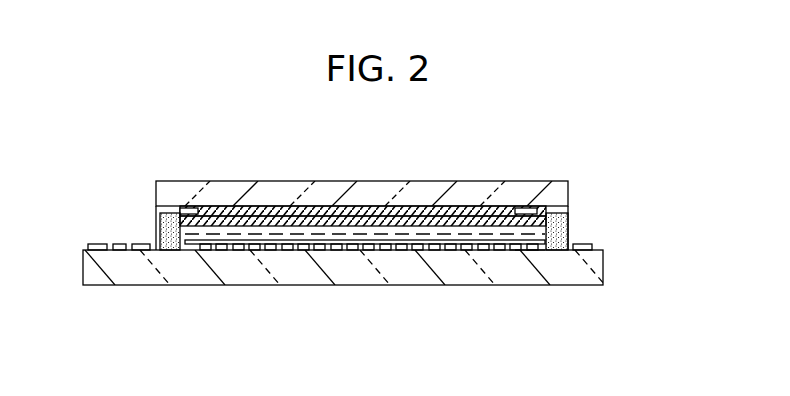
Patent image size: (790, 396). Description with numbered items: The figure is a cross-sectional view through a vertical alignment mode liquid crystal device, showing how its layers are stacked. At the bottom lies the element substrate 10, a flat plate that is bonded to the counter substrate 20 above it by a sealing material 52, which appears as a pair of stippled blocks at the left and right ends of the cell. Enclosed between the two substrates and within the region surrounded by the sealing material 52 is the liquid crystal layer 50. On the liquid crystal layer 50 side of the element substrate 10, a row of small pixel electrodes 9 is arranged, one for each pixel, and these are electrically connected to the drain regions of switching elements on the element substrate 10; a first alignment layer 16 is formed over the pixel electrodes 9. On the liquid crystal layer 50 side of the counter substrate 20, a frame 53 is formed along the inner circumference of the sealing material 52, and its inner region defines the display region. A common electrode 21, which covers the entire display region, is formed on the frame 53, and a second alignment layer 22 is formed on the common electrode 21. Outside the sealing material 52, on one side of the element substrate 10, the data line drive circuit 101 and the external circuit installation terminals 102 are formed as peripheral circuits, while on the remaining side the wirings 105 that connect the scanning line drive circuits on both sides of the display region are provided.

The pixel electrodes 9 is at (250, 251).
The element substrate 10 is at (457, 267).
The first alignment layer 16 is at (530, 251).
The counter substrate 20 is at (358, 200).
The common electrode 21 is at (470, 218).
The second alignment layer 22 is at (250, 208).
The liquid crystal layer 50 is at (360, 250).
The sealing material 52 is at (555, 237).
The frame 53 is at (200, 208).
The data line drive circuit 101 is at (134, 243).
The external circuit installation terminals 102 is at (97, 243).
The wirings 105 is at (583, 251).